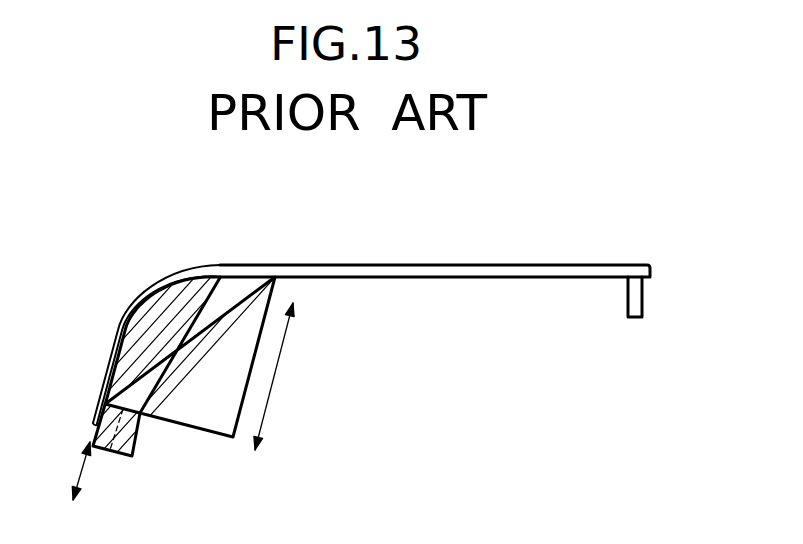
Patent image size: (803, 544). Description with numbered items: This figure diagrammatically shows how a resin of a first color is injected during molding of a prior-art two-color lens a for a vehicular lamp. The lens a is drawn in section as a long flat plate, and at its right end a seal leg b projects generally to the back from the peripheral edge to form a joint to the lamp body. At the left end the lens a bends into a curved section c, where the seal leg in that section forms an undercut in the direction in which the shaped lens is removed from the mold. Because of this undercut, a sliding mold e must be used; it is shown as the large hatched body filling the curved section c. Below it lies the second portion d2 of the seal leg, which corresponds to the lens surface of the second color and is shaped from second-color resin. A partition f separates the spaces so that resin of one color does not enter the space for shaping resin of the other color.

The lens a is at (440, 264).
The seal leg b is at (634, 297).
The curved section c is at (132, 254).
The second portion d2 is at (137, 457).
The sliding mold e is at (210, 418).
The partition f is at (113, 452).